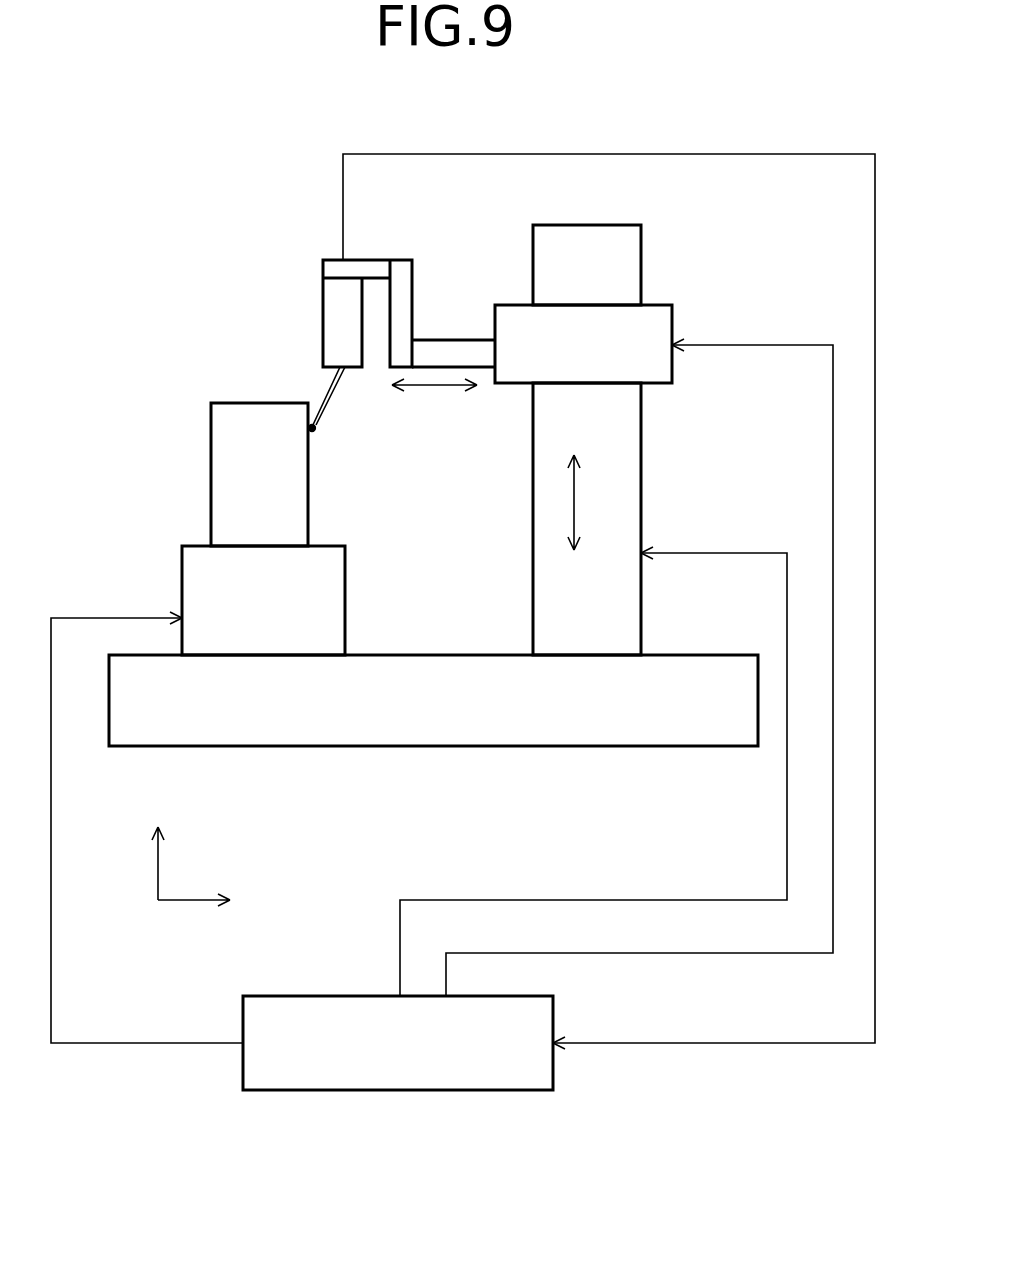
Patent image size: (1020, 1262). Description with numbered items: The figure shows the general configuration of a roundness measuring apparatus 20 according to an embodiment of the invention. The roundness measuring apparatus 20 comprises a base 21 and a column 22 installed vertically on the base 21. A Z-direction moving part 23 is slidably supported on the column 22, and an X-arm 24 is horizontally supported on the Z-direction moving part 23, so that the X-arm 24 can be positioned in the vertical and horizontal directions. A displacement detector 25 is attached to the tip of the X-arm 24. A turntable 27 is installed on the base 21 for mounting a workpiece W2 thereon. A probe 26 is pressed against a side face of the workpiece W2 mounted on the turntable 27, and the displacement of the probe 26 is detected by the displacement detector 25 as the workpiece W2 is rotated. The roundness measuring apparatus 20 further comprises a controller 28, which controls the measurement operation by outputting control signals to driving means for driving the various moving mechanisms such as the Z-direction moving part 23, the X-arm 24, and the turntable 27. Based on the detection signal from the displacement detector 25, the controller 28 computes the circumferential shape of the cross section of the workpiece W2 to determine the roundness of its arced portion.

The roundness measuring apparatus 20 is at (114, 128).
The base 21 is at (410, 655).
The column 22 is at (642, 232).
The Z-direction moving part 23 is at (672, 315).
The X-arm 24 is at (445, 338).
The displacement detector 25 is at (323, 305).
The probe 26 is at (330, 387).
The turntable 27 is at (183, 563).
The controller 28 is at (405, 1092).
The workpiece W2 is at (210, 410).